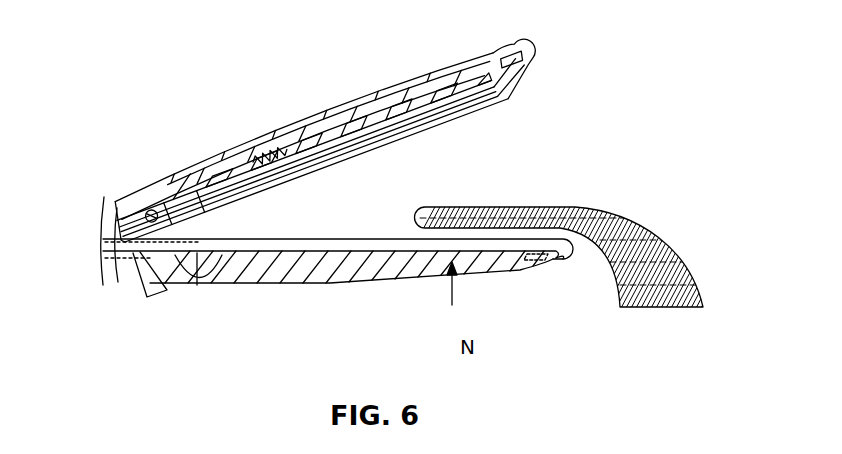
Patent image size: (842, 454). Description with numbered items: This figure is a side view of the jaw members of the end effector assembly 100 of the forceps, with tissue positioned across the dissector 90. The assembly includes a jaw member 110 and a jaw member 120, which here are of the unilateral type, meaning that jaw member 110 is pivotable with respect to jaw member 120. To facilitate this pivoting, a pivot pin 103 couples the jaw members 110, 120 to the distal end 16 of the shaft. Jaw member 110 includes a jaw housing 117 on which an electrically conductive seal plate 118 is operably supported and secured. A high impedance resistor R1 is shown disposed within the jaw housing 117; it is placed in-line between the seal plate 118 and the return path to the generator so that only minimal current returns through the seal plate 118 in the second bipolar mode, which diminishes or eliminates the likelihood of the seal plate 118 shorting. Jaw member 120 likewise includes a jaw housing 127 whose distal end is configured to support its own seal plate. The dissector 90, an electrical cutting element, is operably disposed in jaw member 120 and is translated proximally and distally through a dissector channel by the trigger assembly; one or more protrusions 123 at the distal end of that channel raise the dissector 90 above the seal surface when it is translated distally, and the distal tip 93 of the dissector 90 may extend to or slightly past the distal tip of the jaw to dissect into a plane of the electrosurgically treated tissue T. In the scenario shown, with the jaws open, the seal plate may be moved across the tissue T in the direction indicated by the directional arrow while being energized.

The end effector assembly 100 is at (620, 75).
The jaw member 110 is at (515, 69).
The jaw housing 117 is at (306, 134).
The electrically conductive seal plate 118 is at (310, 154).
The high impedance resistor R1 is at (269, 156).
The pivot pin 103 is at (148, 200).
The distal end of the shaft 16 is at (100, 258).
The dissector 90 is at (385, 238).
The jaw member 120 is at (377, 301).
The jaw housing 127 is at (322, 282).
The protrusions 123 is at (528, 262).
The distal tip of the dissector 93 is at (566, 263).
The tissue T is at (665, 243).